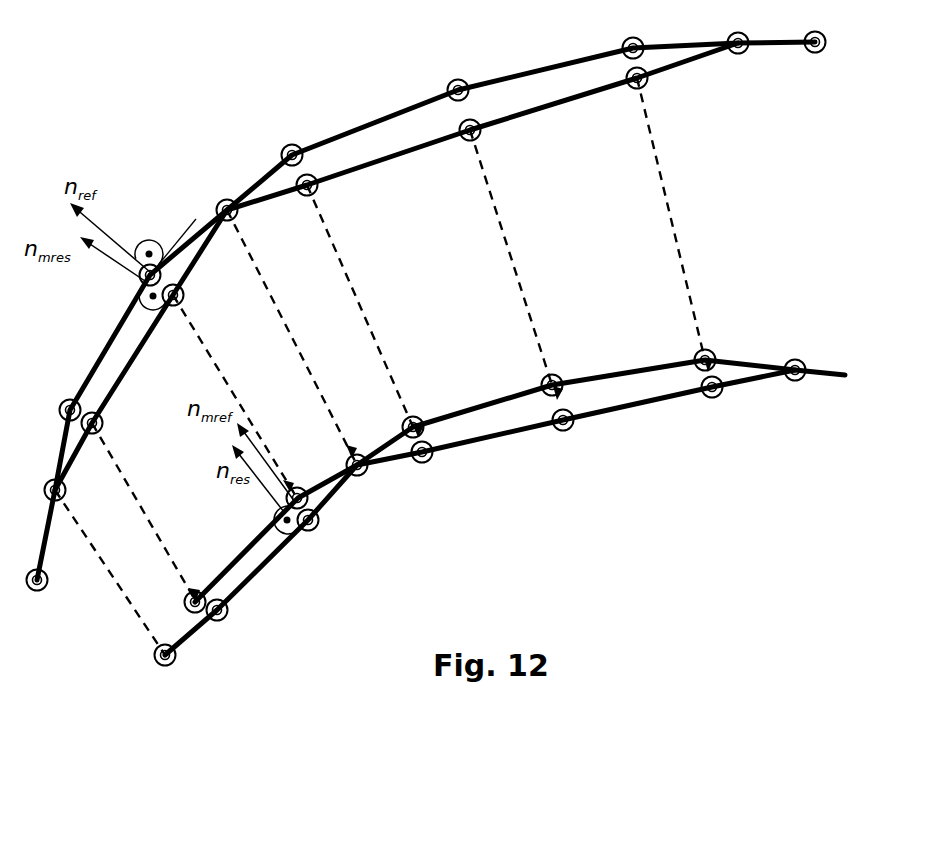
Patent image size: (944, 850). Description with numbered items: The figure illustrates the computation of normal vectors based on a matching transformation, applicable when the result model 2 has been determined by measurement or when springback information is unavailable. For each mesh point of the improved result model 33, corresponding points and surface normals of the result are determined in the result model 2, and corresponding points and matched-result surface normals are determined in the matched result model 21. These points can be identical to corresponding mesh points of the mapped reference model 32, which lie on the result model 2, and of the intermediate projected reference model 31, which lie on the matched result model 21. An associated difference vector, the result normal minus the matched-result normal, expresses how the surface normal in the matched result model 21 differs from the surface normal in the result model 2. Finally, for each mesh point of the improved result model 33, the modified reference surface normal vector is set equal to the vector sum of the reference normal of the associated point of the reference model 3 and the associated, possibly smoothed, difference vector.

The result model 2 is at (480, 512).
The matched result model 21 is at (396, 266).
The reference model 3 is at (165, 236).
The intermediate projected reference model 31 is at (190, 303).
The mapped reference model 32 is at (325, 542).
The improved result model 33 is at (292, 451).